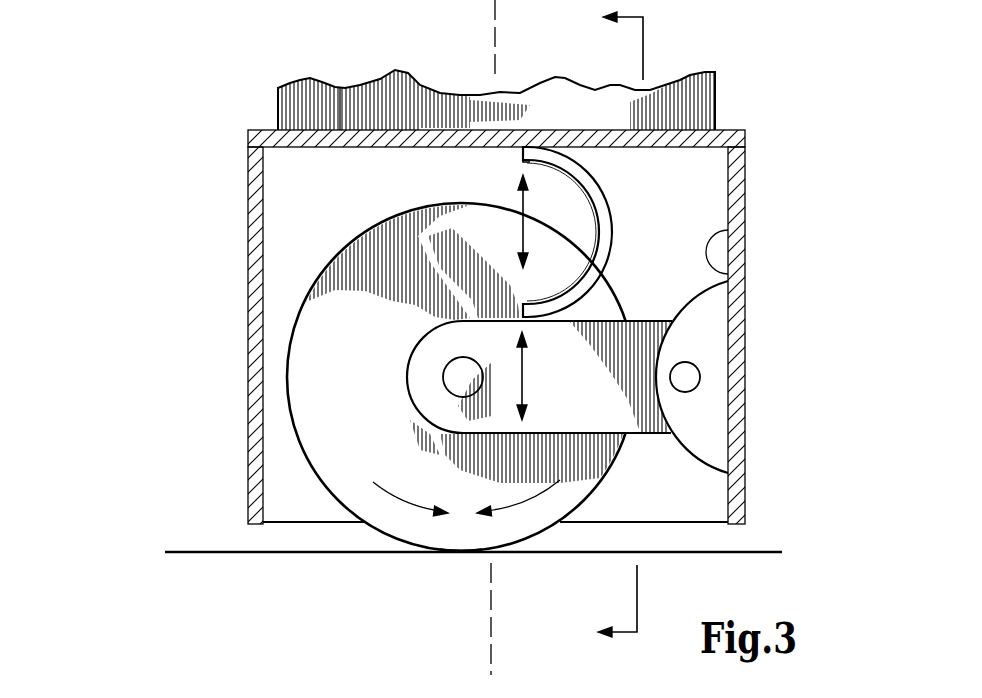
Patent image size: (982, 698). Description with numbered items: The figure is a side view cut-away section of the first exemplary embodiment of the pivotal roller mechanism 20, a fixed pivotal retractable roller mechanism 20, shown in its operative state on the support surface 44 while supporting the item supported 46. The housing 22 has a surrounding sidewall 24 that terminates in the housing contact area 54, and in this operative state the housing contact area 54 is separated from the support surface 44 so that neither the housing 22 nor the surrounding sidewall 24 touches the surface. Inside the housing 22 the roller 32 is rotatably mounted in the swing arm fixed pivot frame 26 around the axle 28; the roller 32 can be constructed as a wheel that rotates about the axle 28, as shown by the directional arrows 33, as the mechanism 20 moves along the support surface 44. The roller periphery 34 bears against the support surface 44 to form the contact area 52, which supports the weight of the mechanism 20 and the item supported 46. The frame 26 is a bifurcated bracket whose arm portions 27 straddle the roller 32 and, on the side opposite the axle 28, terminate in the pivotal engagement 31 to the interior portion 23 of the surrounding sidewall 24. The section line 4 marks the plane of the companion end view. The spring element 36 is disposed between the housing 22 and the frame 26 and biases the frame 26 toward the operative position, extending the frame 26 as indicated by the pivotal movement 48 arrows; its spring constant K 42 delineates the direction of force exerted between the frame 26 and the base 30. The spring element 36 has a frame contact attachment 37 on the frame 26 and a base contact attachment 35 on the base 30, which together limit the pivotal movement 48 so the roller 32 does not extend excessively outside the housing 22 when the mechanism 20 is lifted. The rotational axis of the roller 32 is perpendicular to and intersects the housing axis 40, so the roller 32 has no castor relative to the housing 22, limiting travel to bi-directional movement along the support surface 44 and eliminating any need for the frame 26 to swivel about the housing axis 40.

The section line 4- 4 is at (608, 329).
The pivotal roller mechanism 20 is at (218, 133).
The housing 22 is at (742, 132).
The interior portion 23 is at (745, 222).
The surrounding sidewall 24 is at (245, 460).
The frame 26 is at (645, 321).
The arm portions 27 is at (590, 417).
The axle 28 is at (455, 378).
The base 30 is at (340, 88).
The pivotal engagement 31 is at (686, 375).
The roller 32 is at (350, 296).
The directional arrows 33 is at (400, 498).
The roller periphery 34 is at (365, 232).
The base contact attachment 35 is at (536, 138).
The spring element 36 is at (607, 205).
The frame contact attachment 37 is at (538, 300).
The housing axis 40 is at (494, 13).
The spring constant K 42 is at (520, 192).
The support surface 44 is at (226, 553).
The item supported 46 is at (690, 88).
The pivotal movement 48 is at (522, 372).
The contact area 52 is at (462, 553).
The housing contact area 54 is at (785, 551).